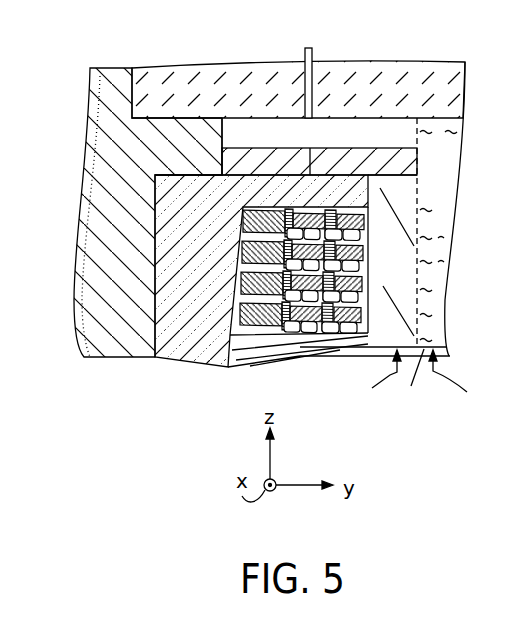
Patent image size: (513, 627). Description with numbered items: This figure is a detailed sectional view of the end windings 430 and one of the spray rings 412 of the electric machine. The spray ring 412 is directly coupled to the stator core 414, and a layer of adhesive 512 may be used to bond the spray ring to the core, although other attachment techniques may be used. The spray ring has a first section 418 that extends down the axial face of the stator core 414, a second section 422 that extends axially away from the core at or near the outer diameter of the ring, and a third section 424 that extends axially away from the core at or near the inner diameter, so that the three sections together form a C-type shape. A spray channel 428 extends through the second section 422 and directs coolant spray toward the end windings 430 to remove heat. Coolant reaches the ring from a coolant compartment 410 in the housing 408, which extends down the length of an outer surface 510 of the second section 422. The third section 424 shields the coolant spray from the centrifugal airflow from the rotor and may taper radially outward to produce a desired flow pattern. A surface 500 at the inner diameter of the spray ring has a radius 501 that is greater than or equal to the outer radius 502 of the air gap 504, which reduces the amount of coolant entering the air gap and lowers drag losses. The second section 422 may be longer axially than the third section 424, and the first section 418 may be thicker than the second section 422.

The housing 408 is at (97, 57).
The coolant compartment 410 is at (358, 132).
The spray ring 412 is at (211, 152).
The stator core 414 is at (452, 189).
The first section 418 is at (407, 282).
The second section 422 is at (289, 171).
The third section 424 is at (337, 346).
The spray channel 428 is at (313, 152).
The end windings 430 is at (218, 357).
The surface 500 is at (347, 349).
The radius 501 is at (371, 378).
The outer radius 502 is at (463, 379).
The air gap 504 is at (410, 383).
The outer surface 510 is at (293, 132).
The layer of adhesive 512 is at (447, 216).